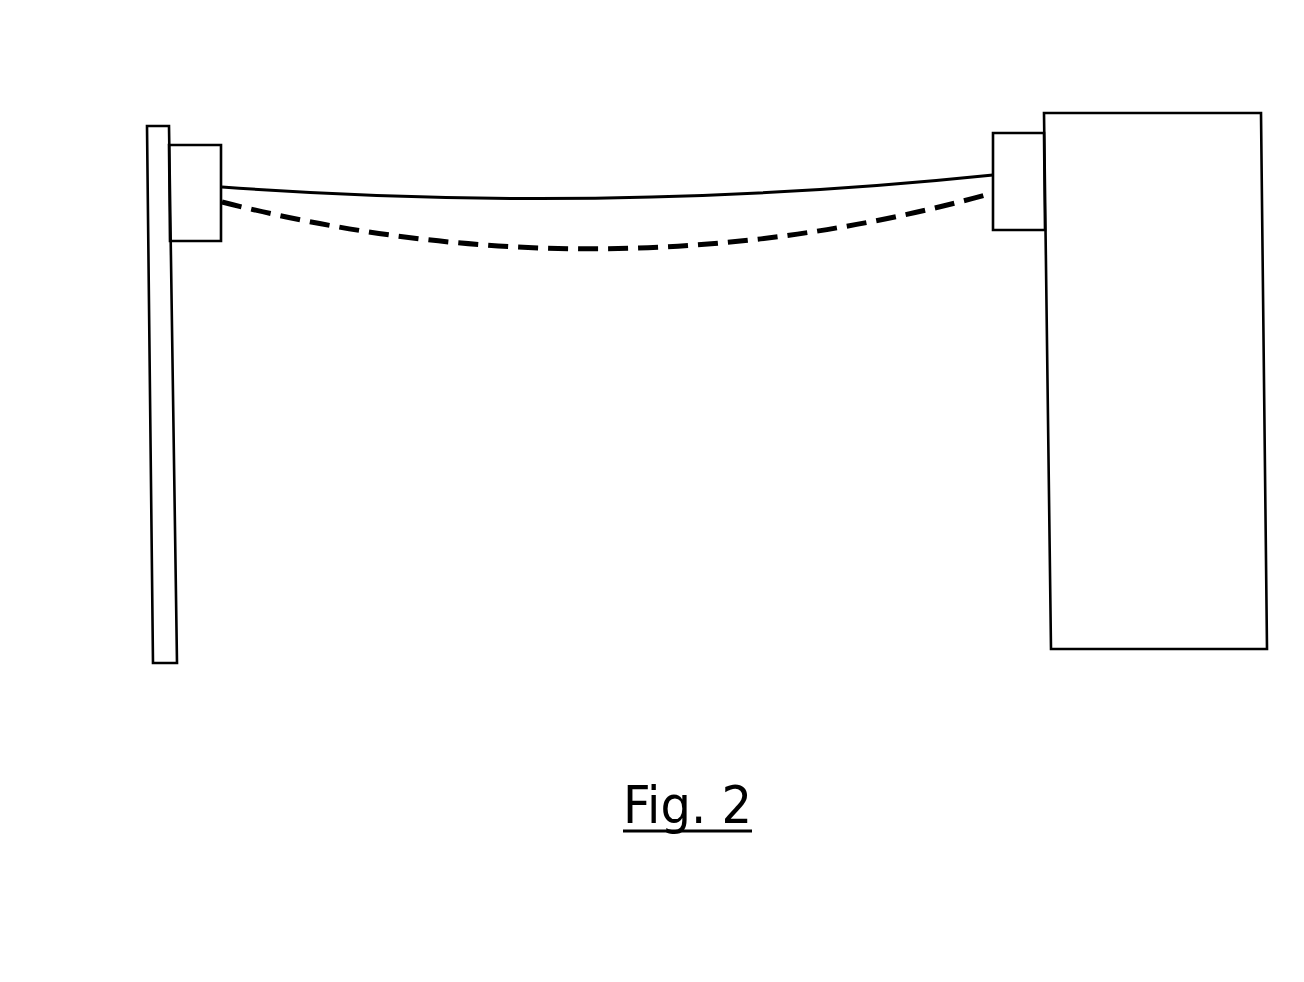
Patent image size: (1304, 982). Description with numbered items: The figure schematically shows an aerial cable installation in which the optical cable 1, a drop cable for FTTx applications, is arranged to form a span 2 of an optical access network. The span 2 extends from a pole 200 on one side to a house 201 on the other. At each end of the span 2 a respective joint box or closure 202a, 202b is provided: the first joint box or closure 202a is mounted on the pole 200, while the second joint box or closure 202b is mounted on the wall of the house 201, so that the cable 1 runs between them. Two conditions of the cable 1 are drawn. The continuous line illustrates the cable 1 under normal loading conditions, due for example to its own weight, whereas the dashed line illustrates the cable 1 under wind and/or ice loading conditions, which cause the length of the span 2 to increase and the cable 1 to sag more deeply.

The optical cable 1 is at (632, 198).
The span 2 is at (394, 133).
The pole 200 is at (146, 215).
The house 201 is at (1123, 112).
The joint box or closure 202a is at (221, 241).
The joint box or closure 202b is at (992, 230).